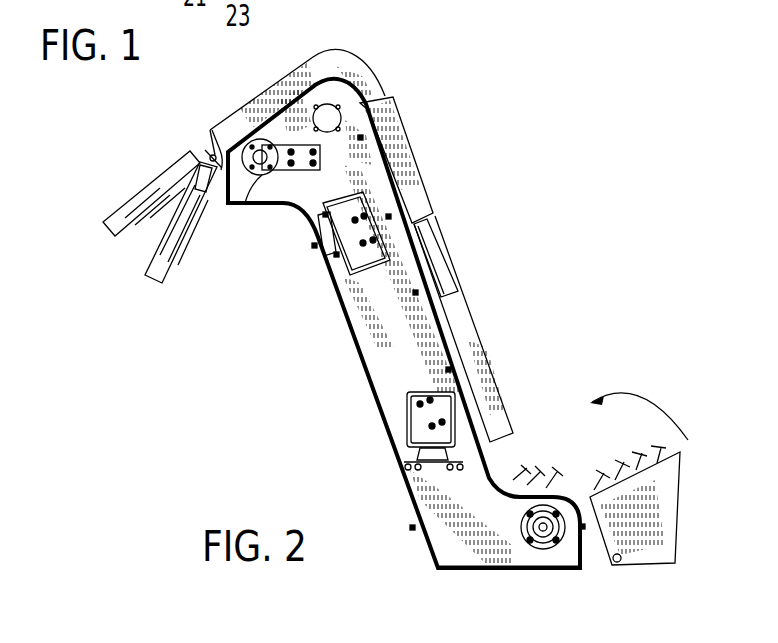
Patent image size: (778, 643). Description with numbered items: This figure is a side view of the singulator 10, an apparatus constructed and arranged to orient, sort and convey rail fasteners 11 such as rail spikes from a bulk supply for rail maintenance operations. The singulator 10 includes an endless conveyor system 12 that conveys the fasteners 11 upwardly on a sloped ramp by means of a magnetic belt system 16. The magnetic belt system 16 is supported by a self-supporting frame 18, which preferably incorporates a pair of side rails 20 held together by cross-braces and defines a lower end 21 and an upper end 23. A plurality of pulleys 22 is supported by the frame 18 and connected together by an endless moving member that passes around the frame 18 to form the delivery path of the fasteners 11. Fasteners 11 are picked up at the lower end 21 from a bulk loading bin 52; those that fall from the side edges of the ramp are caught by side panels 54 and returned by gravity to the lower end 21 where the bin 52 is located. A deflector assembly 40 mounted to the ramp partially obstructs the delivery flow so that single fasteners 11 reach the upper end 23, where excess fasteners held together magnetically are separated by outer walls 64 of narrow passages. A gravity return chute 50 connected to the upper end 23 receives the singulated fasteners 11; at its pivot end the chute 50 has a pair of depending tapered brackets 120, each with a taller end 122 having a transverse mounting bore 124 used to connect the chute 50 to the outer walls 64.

The singulator 10 is at (480, 165).
The rail fasteners 11 is at (515, 465).
The endless conveyor system 12 is at (522, 404).
The magnetic belt system 16 is at (390, 508).
The self-supporting frame 18 is at (345, 330).
The side rails 20 is at (472, 545).
The lower end 21 is at (568, 495).
The pulleys 22 is at (256, 178).
The upper end 23 is at (337, 83).
The deflector assembly 40 is at (413, 120).
The gravity return chute 50 is at (103, 230).
The bulk loading bin 52 is at (635, 550).
The side panels 54 is at (462, 327).
The outer walls 64 is at (355, 80).
The tapered brackets 120 is at (204, 195).
The taller end 122 is at (208, 156).
The transverse mounting bore 124 is at (210, 130).